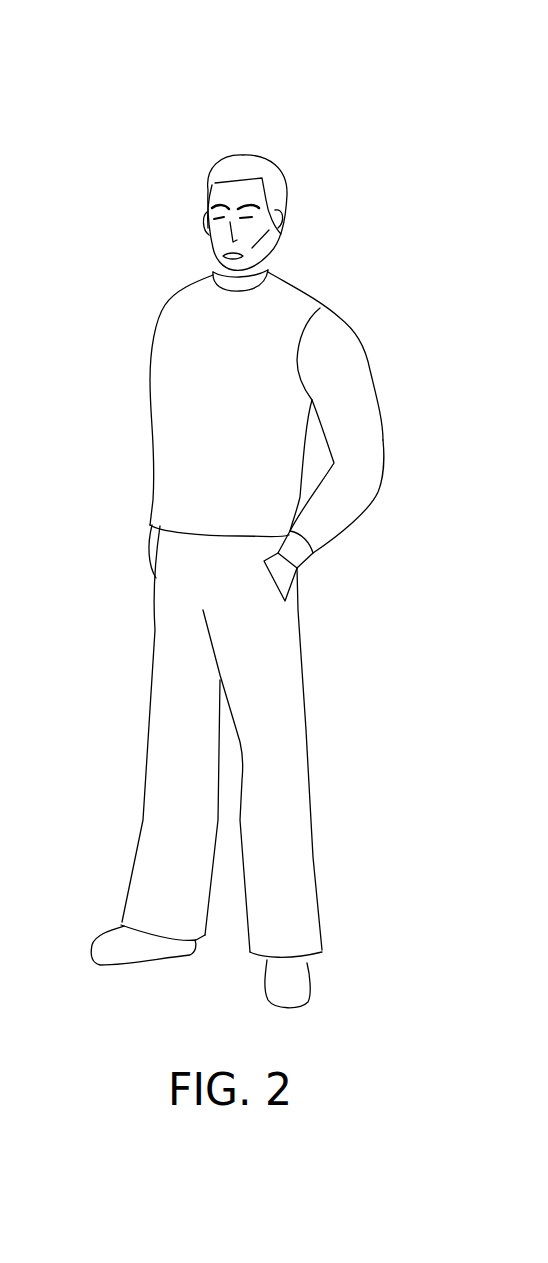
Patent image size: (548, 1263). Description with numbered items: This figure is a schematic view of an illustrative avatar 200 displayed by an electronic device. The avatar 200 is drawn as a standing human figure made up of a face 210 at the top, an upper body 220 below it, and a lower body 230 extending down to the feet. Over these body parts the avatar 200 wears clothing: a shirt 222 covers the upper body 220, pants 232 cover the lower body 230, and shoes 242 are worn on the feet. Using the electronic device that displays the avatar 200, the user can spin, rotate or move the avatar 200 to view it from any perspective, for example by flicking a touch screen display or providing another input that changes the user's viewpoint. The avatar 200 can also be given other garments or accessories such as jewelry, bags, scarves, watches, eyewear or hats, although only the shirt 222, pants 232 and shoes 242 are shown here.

The avatar 200 is at (353, 83).
The face 210 is at (283, 183).
The upper body 220 is at (180, 376).
The shirt 222 is at (344, 397).
The lower body 230 is at (277, 730).
The pants 232 is at (302, 855).
The shoes 242 is at (304, 988).